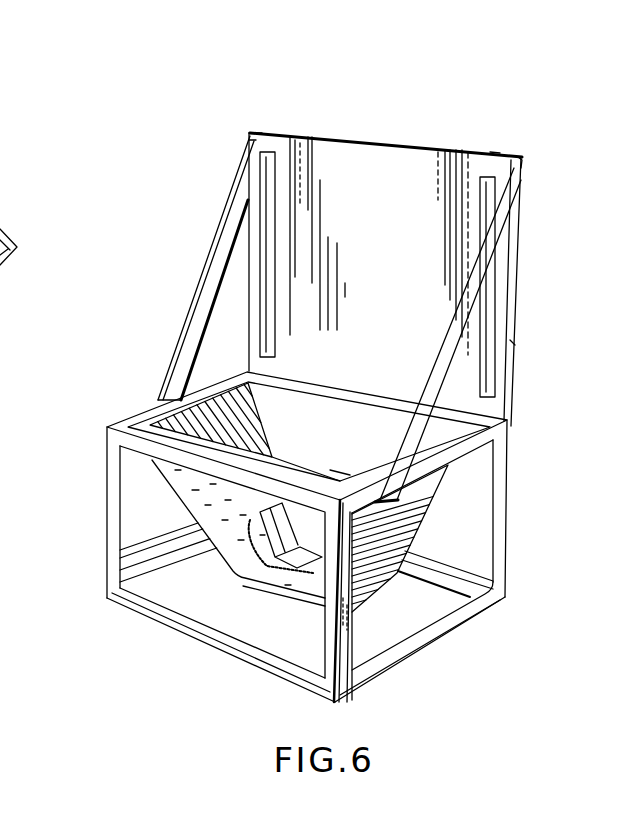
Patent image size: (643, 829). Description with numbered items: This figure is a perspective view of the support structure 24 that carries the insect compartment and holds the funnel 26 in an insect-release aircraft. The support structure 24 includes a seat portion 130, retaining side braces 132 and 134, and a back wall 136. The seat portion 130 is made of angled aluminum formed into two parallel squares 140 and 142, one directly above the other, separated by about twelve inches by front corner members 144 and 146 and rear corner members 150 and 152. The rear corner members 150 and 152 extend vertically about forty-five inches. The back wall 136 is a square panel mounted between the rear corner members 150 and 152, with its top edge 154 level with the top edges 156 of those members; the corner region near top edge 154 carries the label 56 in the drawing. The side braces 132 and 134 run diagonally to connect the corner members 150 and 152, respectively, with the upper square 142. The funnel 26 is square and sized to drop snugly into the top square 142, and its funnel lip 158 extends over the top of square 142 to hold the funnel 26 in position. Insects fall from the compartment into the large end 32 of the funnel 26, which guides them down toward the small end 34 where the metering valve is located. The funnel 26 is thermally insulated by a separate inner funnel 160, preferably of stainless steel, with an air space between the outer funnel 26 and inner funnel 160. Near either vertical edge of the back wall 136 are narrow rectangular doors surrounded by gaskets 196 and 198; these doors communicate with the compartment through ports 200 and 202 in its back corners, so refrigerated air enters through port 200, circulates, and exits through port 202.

The support structure 24 is at (190, 306).
The funnel 26 is at (410, 497).
The large end 32 is at (397, 528).
The small end 34 is at (373, 580).
The back panel top corner 56 is at (523, 158).
The seat portion 130 is at (107, 425).
The retaining side brace 132 is at (207, 260).
The retaining side brace 134 is at (486, 272).
The back wall 136 is at (436, 204).
The square 140 is at (446, 625).
The square 142 is at (511, 421).
The front corner member 144 is at (107, 575).
The front corner member 146 is at (330, 648).
The rear corner member 150 is at (249, 140).
The rear corner member 152 is at (513, 343).
The top edge 154 is at (416, 147).
The top edges 156 is at (253, 132).
The funnel lip 158 is at (310, 473).
The inner funnel 160 is at (359, 433).
The gasket 196 is at (280, 143).
The gasket 198 is at (497, 152).
The port 200 is at (271, 221).
The port 202 is at (486, 210).